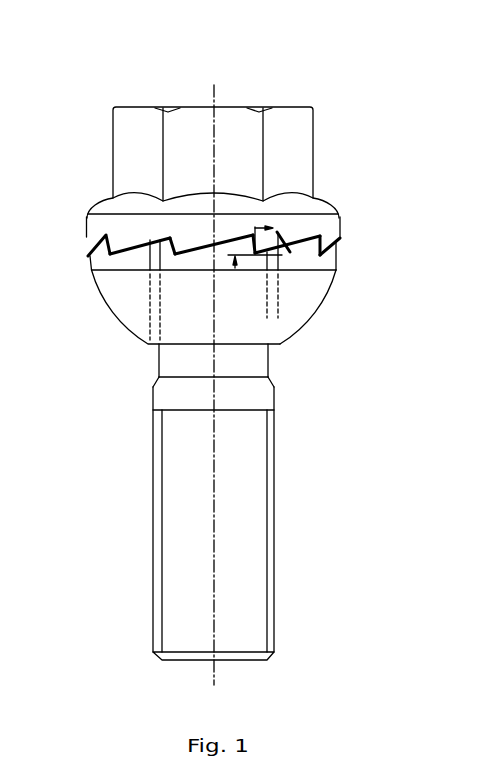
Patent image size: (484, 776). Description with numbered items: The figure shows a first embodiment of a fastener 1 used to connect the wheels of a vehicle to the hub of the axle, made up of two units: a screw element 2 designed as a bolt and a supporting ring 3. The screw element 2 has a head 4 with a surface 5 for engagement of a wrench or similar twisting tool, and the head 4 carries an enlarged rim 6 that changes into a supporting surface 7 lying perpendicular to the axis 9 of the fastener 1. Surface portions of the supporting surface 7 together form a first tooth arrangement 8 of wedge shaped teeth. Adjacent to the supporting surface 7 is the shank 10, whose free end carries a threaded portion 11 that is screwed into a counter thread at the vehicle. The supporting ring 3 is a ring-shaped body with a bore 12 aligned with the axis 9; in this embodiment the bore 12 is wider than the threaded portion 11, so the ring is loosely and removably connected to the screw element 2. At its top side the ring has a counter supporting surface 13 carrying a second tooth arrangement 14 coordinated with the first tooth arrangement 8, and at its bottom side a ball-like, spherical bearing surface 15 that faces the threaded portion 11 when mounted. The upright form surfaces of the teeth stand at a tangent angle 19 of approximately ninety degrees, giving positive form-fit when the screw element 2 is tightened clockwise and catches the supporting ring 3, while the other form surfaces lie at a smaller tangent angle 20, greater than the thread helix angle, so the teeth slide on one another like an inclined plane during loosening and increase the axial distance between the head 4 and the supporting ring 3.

The fastener 1 is at (308, 80).
The screw element 2 is at (263, 99).
The supporting ring 3 is at (302, 340).
The head 4 is at (300, 203).
The surface 5 is at (195, 128).
The enlarged rim 6 is at (331, 224).
The supporting surface 7 is at (122, 235).
The first tooth arrangement 8 is at (201, 244).
The axis 9 is at (215, 96).
The shank 10 is at (180, 362).
The threaded portion 11 is at (160, 496).
The bore 12 is at (147, 310).
The counter supporting surface 13 is at (124, 261).
The second tooth arrangement 14 is at (186, 255).
The bearing surface 15 is at (301, 311).
The tangent angle 19 is at (268, 258).
The tangent angle 20 is at (293, 250).